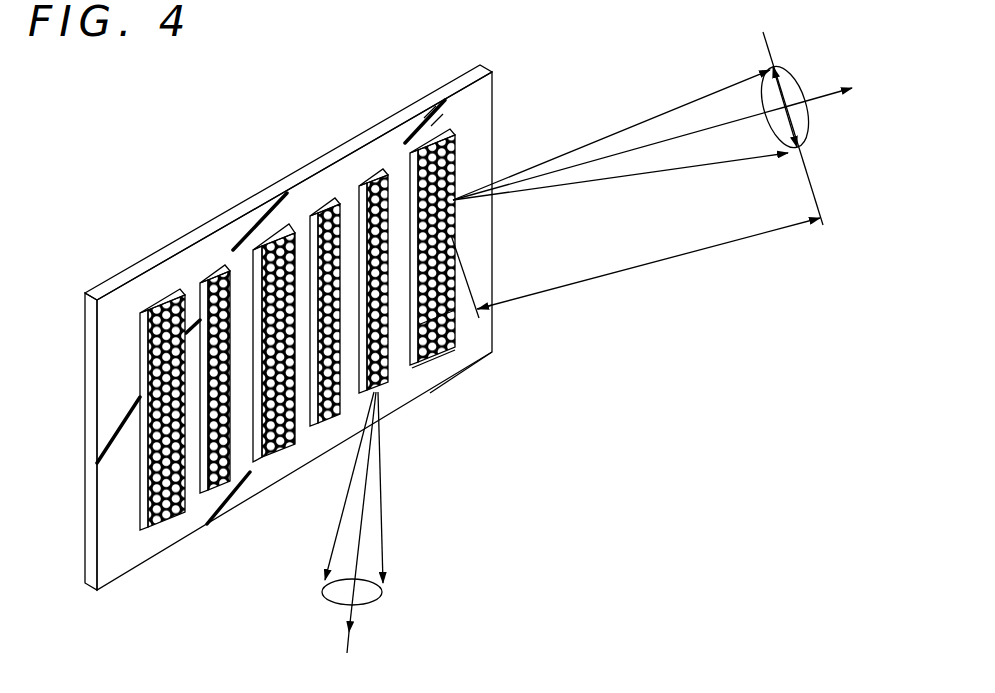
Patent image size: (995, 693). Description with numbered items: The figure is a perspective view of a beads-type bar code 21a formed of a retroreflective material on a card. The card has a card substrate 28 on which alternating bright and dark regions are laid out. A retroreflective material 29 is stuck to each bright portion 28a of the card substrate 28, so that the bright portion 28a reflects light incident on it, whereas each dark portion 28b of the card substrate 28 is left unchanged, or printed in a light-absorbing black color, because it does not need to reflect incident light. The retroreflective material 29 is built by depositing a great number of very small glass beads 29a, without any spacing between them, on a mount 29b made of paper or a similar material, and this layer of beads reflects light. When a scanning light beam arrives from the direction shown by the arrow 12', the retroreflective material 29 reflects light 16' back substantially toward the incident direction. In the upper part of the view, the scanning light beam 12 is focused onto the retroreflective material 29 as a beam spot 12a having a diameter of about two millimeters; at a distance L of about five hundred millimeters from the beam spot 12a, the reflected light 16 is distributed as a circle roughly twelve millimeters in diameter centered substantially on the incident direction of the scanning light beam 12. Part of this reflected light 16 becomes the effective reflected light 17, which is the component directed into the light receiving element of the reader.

The bar code 21a is at (192, 183).
The card substrate 28 is at (147, 262).
The bright portion 28a is at (377, 200).
The dark portion 28b is at (353, 200).
The retroreflective material 29 is at (602, 350).
The glass beads 29a is at (458, 325).
The mount 29b is at (447, 393).
The scanning light beam 12 is at (814, 128).
The beam spot 12a is at (453, 212).
The incident direction arrow 12' is at (398, 522).
The reflected light 16 is at (611, 129).
The effective reflected light 17 is at (620, 129).
The reflected light 16' is at (398, 487).